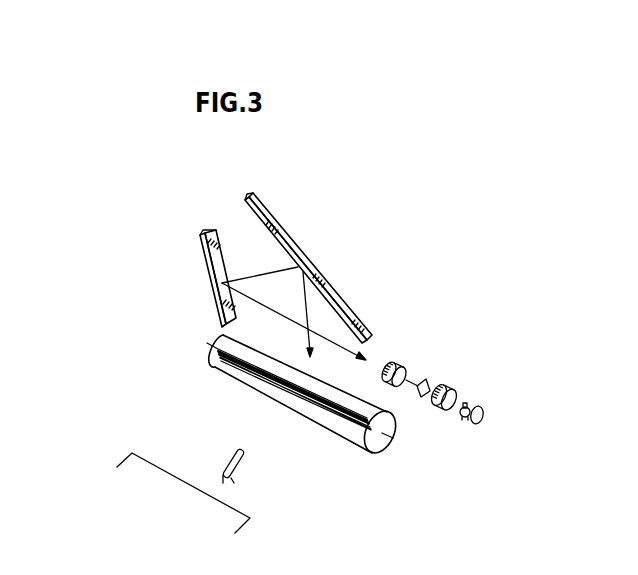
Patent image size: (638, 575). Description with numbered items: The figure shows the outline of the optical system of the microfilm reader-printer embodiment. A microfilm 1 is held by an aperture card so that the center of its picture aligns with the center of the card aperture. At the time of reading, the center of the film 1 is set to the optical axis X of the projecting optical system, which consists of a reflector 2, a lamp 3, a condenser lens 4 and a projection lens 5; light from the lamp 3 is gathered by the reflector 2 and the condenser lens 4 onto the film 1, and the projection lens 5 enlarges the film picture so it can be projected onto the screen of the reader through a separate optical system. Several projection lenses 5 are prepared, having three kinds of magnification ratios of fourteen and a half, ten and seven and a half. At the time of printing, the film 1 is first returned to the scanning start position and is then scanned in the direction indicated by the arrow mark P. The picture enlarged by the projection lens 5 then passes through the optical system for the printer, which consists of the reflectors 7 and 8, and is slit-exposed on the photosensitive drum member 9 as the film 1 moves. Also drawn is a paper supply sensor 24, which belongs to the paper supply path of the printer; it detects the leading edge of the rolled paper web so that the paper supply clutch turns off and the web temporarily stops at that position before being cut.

The microfilm 1 is at (440, 379).
The reflector 2 is at (482, 425).
The lamp 3 is at (463, 418).
The condenser lens 4 is at (437, 408).
The projection lens 5 is at (398, 362).
The reflector 7 is at (210, 258).
The reflector 8 is at (298, 252).
The photosensitive drum member 9 is at (335, 425).
The paper supply sensor 24 is at (232, 453).
The optical axis X is at (375, 364).
The arrow mark P is at (413, 378).